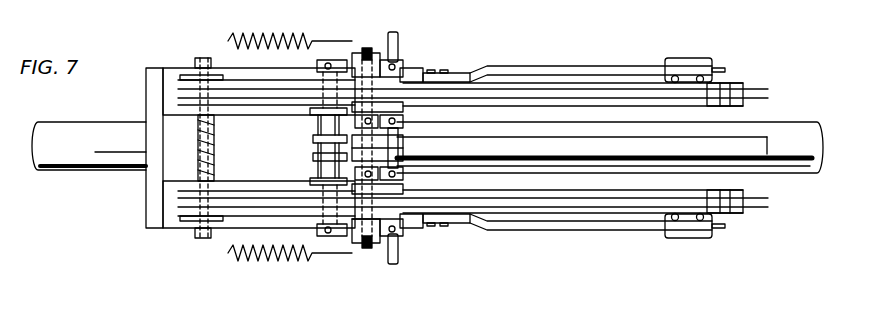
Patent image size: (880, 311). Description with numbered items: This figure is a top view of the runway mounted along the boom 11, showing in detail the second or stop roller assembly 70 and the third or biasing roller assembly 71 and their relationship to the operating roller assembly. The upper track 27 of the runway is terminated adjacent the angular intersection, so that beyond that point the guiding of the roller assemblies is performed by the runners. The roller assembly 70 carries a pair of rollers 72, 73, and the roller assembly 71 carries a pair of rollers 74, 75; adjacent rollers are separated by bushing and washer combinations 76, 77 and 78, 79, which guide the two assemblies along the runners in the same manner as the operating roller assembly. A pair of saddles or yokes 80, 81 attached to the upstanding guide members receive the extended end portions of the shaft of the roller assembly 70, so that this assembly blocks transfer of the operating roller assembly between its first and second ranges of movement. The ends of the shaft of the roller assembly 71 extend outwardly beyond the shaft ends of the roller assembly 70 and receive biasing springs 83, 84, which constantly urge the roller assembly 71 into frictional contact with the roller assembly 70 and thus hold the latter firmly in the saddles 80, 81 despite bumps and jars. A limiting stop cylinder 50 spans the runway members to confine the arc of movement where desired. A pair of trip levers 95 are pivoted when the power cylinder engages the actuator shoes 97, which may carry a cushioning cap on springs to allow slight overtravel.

The boom 11 is at (72, 161).
The upper track 27 is at (164, 187).
The limiting stop cylinder 50 is at (214, 142).
The second roller assembly 70 is at (367, 47).
The third roller assembly 71 is at (393, 33).
The roller 72 is at (372, 76).
The roller 73 is at (370, 248).
The roller 74 is at (410, 72).
The roller 75 is at (405, 218).
The bushing and washer combination 76 is at (308, 108).
The bushing and washer combination 77 is at (312, 184).
The bushing and washer combination 78 is at (345, 99).
The bushing and washer combination 79 is at (345, 197).
The saddle 80 is at (364, 250).
The saddle 81 is at (358, 52).
The biasing spring 83 is at (272, 262).
The biasing spring 84 is at (270, 31).
The trip lever 95 is at (590, 67).
The actuator shoe 97 is at (702, 238).